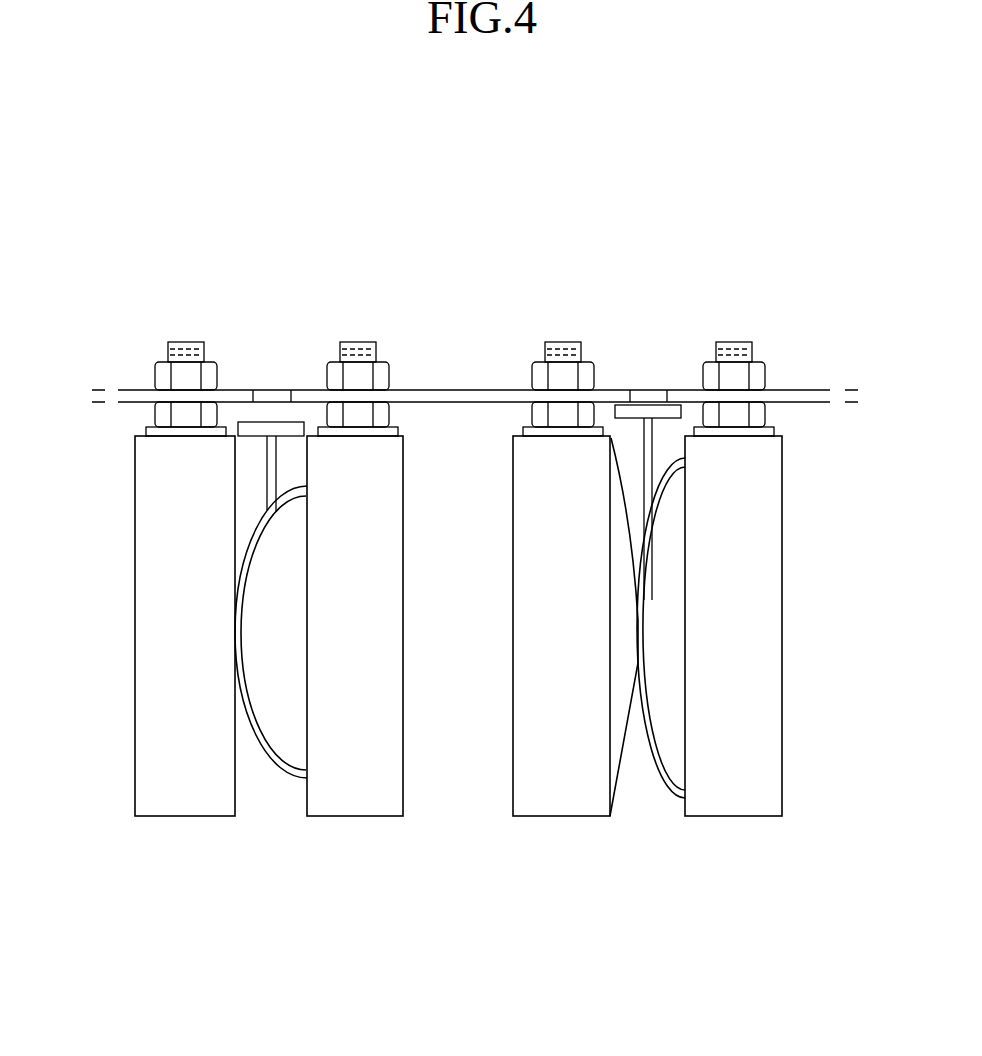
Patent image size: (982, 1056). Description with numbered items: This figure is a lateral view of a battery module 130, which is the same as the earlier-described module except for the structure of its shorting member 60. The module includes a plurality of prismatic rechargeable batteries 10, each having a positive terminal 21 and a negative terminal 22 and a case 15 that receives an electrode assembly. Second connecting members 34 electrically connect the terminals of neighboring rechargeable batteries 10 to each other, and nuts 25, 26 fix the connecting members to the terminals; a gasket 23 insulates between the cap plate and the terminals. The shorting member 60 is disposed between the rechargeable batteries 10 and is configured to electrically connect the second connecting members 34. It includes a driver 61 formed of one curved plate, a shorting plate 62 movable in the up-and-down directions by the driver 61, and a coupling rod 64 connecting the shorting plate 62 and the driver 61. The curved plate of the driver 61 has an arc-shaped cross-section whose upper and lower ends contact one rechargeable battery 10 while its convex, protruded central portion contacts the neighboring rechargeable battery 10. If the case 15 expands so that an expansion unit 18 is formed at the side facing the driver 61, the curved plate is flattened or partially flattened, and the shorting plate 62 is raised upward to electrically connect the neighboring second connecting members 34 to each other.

The battery module 130 is at (660, 203).
The second connecting member 34 is at (455, 398).
The positive terminal 21 is at (362, 348).
The negative terminal 22 is at (560, 348).
The nut 26 is at (328, 378).
The nut 25 is at (163, 415).
The gasket 23 is at (153, 432).
The rechargeable battery 10 is at (165, 822).
The case 15 is at (553, 813).
The expansion unit 18 is at (622, 662).
The shorting member 60 is at (456, 584).
The driver 61 is at (237, 640).
The shorting plate 62 is at (250, 432).
The coupling rod 64 is at (272, 448).